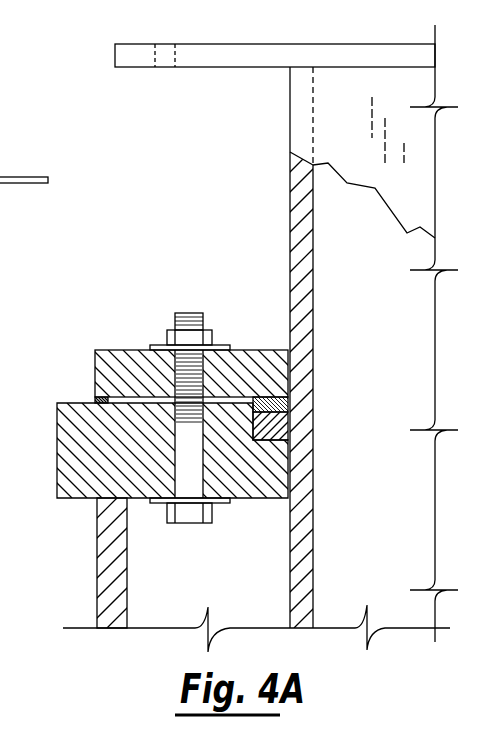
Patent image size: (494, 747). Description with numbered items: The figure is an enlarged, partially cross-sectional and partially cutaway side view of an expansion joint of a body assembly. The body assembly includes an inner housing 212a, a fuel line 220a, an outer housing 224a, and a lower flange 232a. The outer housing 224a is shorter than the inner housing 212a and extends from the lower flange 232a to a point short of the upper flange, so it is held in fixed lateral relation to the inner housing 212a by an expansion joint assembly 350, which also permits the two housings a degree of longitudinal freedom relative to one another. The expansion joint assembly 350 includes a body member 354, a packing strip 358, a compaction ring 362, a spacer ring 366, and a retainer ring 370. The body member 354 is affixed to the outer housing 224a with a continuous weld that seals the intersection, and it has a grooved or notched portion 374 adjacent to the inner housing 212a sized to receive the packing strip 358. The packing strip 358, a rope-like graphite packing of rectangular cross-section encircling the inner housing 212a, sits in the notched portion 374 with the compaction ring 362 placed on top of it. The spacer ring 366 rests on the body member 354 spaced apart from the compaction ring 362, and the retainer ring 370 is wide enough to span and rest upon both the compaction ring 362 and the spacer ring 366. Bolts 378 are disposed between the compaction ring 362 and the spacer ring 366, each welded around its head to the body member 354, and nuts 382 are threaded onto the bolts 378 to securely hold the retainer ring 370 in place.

The inner housing 212a is at (315, 535).
The fuel line 220a is at (0, 242).
The outer housing 224a is at (95, 565).
The lower flange 232a is at (10, 175).
The expansion joint assembly 350 is at (84, 324).
The body member 354 is at (63, 447).
The packing strip 358 is at (290, 427).
The compaction ring 362 is at (288, 405).
The spacer ring 366 is at (93, 400).
The retainer ring 370 is at (271, 350).
The notched portion 374 is at (270, 456).
The bolt 378 is at (190, 525).
The nut 382 is at (165, 338).